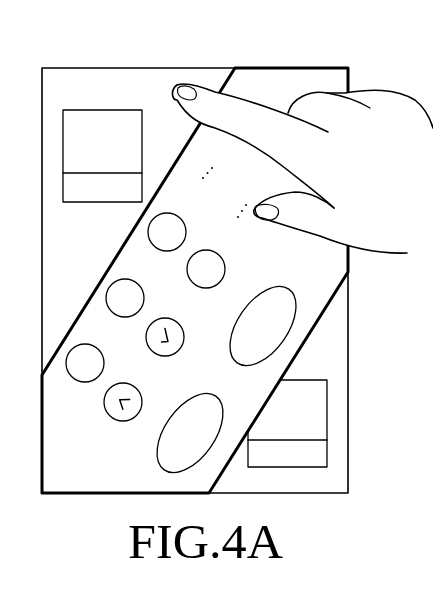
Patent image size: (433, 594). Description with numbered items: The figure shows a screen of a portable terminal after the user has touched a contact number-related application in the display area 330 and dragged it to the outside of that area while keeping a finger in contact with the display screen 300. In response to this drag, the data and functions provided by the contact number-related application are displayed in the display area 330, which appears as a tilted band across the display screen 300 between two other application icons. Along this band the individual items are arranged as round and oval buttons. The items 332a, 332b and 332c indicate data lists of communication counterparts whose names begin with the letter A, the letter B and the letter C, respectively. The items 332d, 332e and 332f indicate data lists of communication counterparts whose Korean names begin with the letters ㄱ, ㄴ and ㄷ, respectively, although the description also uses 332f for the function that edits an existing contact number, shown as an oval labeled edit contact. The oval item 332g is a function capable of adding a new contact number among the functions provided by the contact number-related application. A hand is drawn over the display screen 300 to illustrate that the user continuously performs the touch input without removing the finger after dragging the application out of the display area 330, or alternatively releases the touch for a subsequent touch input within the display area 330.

The display screen 300 is at (198, 67).
The display area 330 is at (119, 250).
The data list of communication counterparts beginning with letter A 332a is at (95, 346).
The data list of communication counterparts beginning with letter B 332b is at (135, 281).
The data list of communication counterparts beginning with letter C 332c is at (174, 214).
The data list of communication counterparts beginning with Korean letter ㄱ 332d is at (132, 384).
The data list of communication counterparts beginning with Korean letter ㄴ 332e is at (170, 318).
The edit contact number function 332f is at (212, 252).
The add contact number function 332g is at (193, 392).